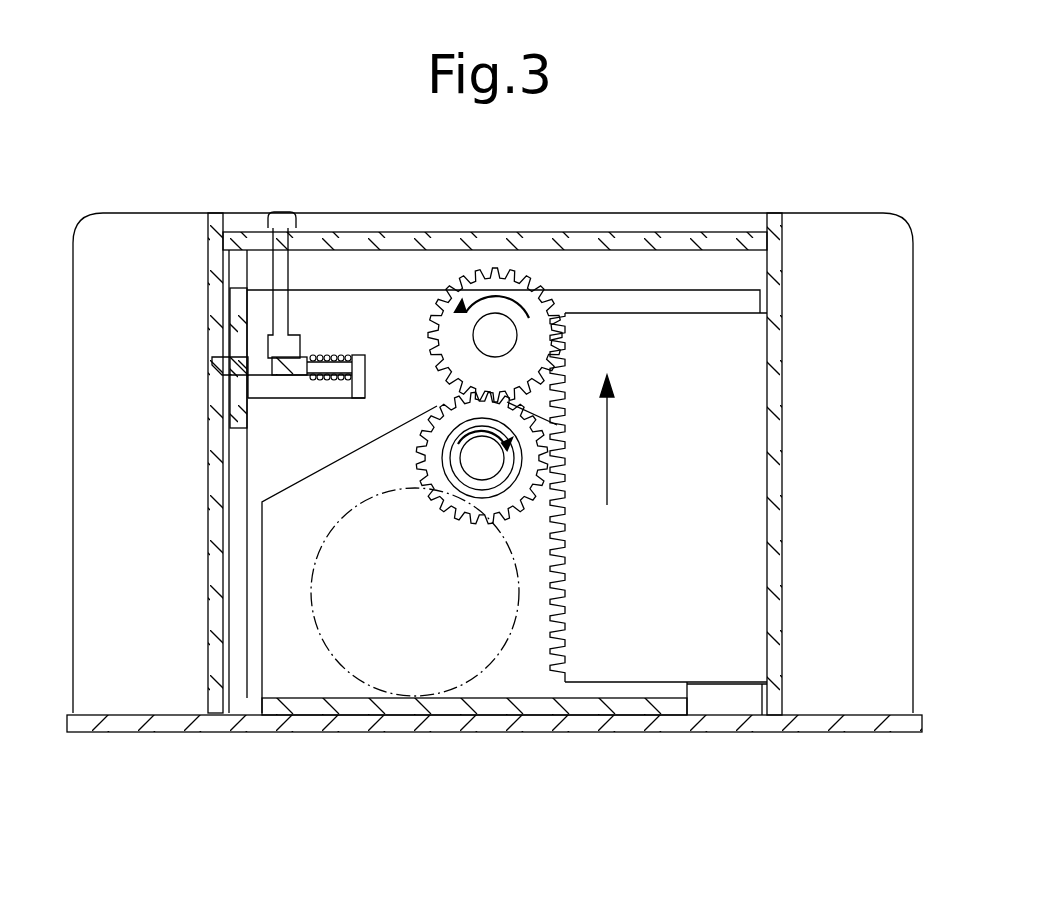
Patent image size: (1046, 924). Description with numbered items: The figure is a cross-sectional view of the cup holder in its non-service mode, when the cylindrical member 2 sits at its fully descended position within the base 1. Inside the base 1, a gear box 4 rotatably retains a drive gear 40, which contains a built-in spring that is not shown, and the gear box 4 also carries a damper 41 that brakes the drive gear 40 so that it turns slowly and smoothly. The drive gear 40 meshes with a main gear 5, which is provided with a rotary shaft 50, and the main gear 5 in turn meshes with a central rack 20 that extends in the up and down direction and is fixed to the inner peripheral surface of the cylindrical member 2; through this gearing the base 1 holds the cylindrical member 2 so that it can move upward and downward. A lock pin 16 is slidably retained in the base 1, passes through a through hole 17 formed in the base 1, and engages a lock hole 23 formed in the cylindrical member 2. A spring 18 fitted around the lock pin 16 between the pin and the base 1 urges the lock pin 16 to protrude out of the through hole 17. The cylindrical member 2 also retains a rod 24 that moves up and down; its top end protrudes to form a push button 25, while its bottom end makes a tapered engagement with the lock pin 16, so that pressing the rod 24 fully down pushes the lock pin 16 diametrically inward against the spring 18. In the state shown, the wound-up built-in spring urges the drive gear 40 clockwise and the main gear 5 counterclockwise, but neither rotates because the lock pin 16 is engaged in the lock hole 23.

The base 1 is at (752, 727).
The cylindrical member 2 is at (777, 258).
The gear box 4 is at (305, 495).
The main gear 5 is at (508, 290).
The lock pin 16 is at (327, 357).
The through hole 17 is at (236, 350).
The spring 18 is at (343, 356).
The central rack 20 is at (550, 643).
The lock hole 23 is at (213, 369).
The rod 24 is at (290, 268).
The push button 25 is at (282, 218).
The drive gear 40 is at (425, 452).
The damper 41 is at (362, 645).
The rotary shaft 50 is at (492, 334).